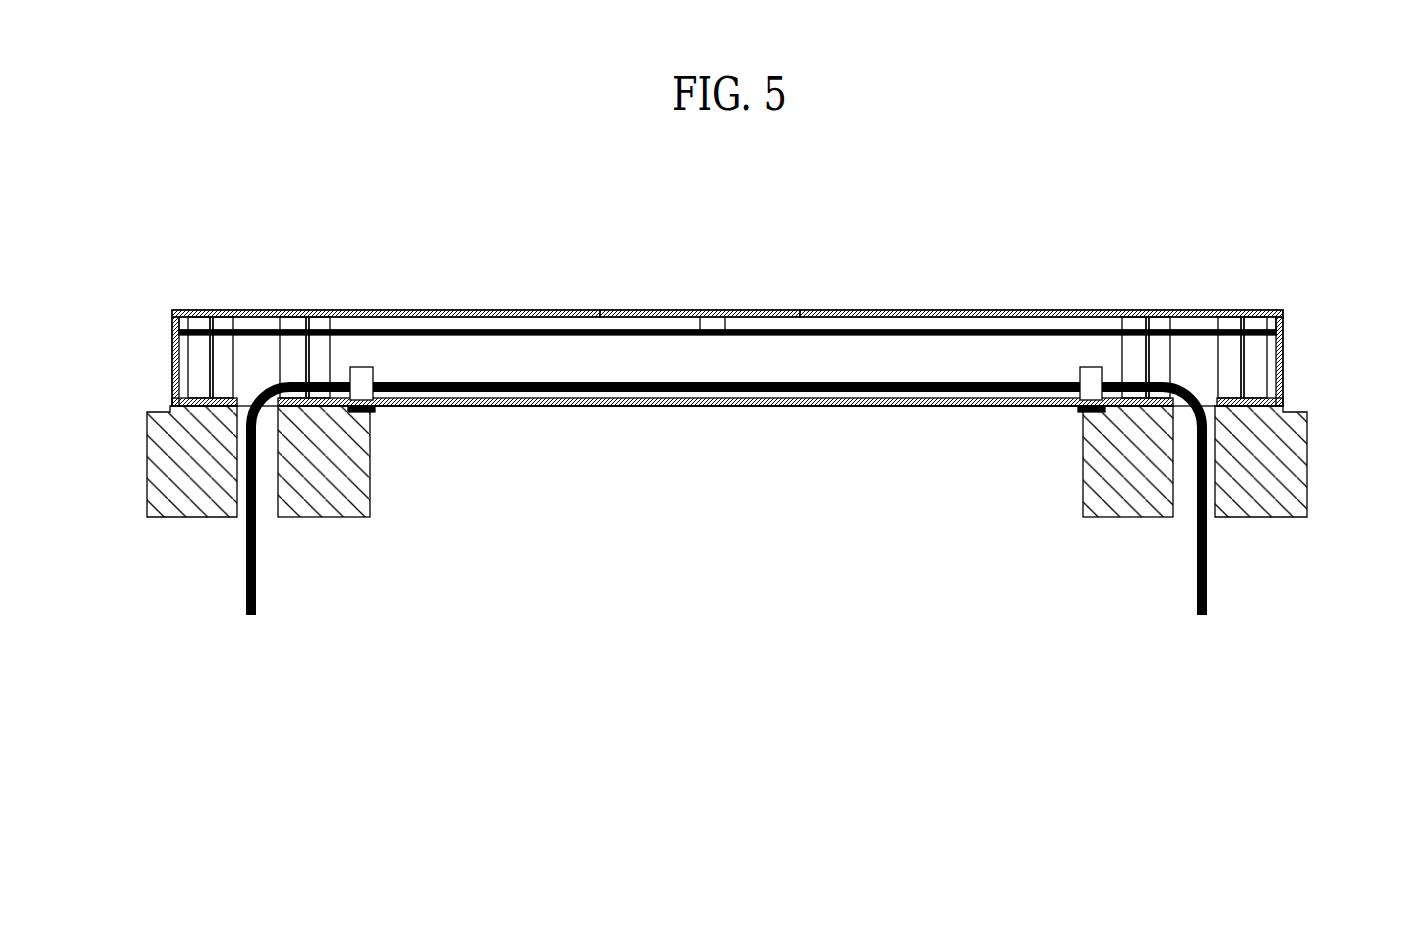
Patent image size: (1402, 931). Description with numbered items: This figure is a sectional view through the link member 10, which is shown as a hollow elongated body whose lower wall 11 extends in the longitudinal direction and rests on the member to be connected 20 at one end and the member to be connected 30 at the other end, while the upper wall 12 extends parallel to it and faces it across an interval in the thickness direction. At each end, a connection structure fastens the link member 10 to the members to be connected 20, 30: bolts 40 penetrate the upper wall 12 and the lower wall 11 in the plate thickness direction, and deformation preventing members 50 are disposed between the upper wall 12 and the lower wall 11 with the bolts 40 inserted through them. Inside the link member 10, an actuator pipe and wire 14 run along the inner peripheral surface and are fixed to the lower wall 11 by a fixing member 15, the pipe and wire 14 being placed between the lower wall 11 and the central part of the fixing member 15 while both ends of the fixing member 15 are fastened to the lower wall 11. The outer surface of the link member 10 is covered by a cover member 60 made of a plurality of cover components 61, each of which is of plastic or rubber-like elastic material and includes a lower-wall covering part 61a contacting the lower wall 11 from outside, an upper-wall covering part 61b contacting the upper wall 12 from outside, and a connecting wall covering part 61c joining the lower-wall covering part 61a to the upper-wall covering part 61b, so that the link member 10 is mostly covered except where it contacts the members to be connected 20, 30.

The link member 10 is at (838, 312).
The lower wall 11 is at (802, 410).
The upper wall 12 is at (465, 328).
The pipe and wire 14 is at (688, 382).
The fixing member 15 is at (375, 375).
The member to be connected 20 is at (170, 403).
The member to be connected 30 is at (1307, 458).
The bolt 40 is at (310, 320).
The deformation preventing member 50 is at (235, 348).
The cover member 60 is at (975, 290).
The cover component 61 is at (532, 310).
The lower-wall covering part 61a is at (490, 410).
The upper-wall covering part 61b is at (633, 310).
The connecting wall covering part 61c is at (172, 342).